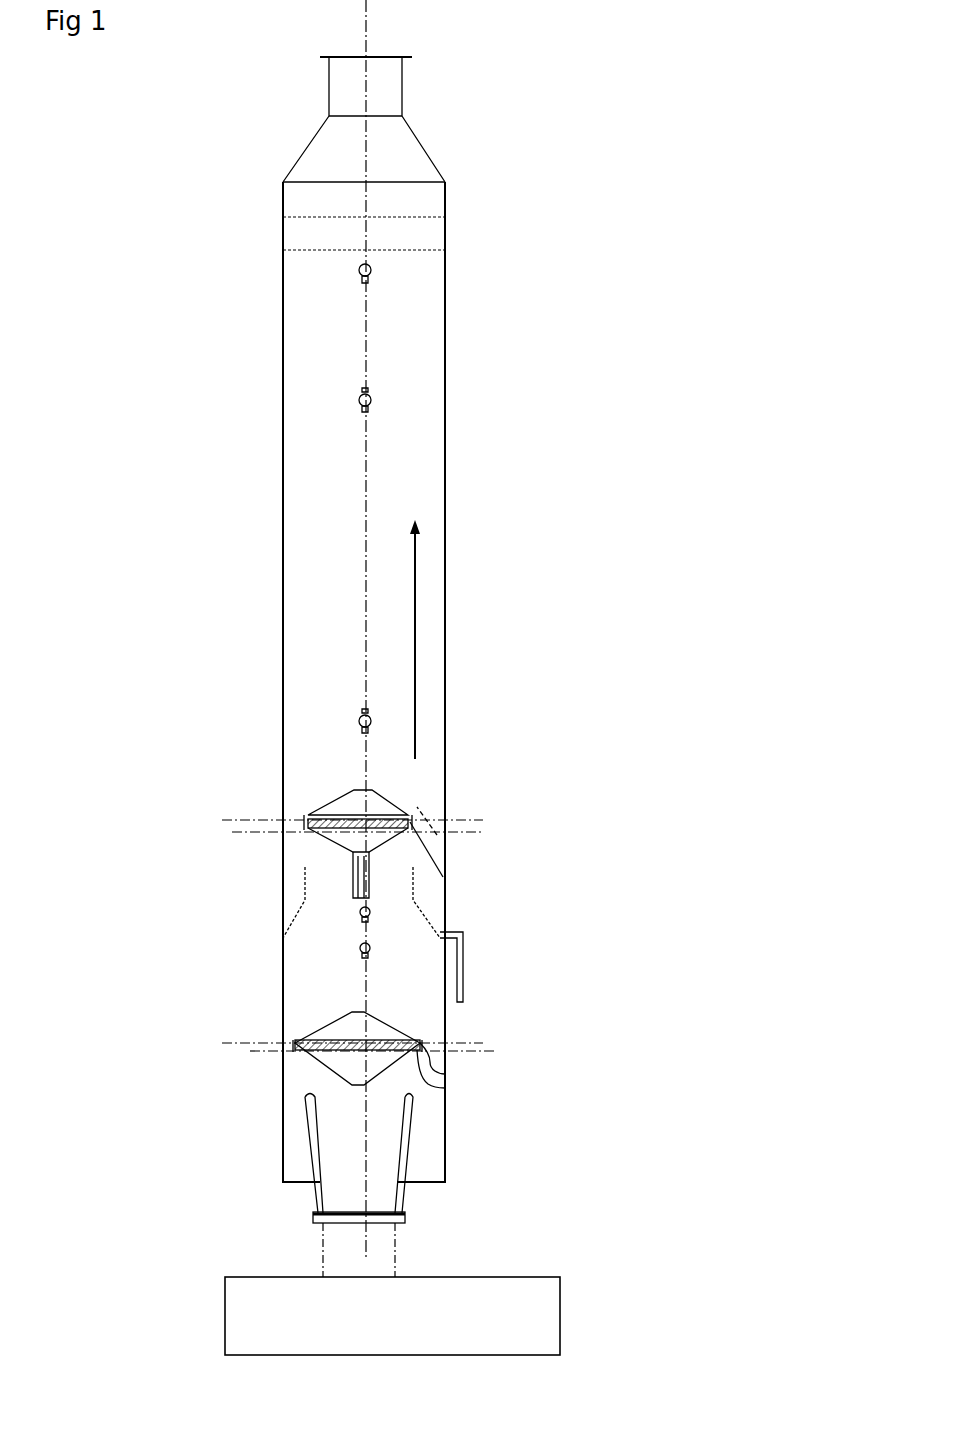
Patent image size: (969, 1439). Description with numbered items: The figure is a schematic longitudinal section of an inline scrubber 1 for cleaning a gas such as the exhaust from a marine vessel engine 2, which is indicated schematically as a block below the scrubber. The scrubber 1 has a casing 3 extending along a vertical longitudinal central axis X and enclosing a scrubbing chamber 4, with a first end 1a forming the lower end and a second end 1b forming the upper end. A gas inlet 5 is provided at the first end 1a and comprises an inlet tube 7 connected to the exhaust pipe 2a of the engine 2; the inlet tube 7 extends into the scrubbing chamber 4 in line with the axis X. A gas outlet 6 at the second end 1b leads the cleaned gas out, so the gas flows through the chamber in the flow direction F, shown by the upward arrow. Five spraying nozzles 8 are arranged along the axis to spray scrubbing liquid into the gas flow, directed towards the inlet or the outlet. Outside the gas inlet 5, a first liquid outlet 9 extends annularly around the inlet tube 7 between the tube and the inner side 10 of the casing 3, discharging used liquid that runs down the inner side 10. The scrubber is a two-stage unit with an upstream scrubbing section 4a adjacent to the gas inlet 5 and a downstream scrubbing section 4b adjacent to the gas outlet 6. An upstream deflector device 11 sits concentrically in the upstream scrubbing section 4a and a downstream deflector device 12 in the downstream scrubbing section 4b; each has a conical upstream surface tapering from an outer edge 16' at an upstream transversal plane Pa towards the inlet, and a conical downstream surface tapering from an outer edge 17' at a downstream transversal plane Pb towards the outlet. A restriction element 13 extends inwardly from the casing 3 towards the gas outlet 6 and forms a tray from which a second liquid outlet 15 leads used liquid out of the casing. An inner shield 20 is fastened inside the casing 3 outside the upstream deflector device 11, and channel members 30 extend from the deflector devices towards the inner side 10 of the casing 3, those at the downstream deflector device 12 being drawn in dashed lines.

The inline scrubber 1 is at (484, 74).
The first end 1a is at (315, 1212).
The second end 1b is at (327, 57).
The marine vessel engine 2 is at (527, 1295).
The exhaust pipe 2a is at (323, 1243).
The casing 3 is at (283, 398).
The scrubbing chamber 4 is at (331, 572).
The upstream scrubbing section 4a is at (416, 978).
The downstream scrubbing section 4b is at (346, 763).
The gas inlet 5 is at (345, 1135).
The gas outlet 6 is at (353, 93).
The inlet tube 7 is at (408, 1143).
The spraying nozzle 8 is at (361, 402).
The first liquid outlet 9 is at (288, 1181).
The inner side 10 is at (283, 523).
The upstream deflector device 11 is at (292, 1060).
The downstream deflector device 12 is at (292, 806).
The restriction element 13 is at (305, 878).
The second liquid outlet 15 is at (465, 932).
The outer edge of the upstream surface 16' is at (503, 968).
The outer edge of the downstream surface 17' is at (290, 933).
The inner shield 20 is at (283, 1022).
The channel member 30 is at (437, 835).
The flow direction F is at (417, 603).
The longitudinal central axis X is at (367, 128).
The upstream transversal plane Pa is at (473, 832).
The downstream transversal plane Pb is at (458, 821).